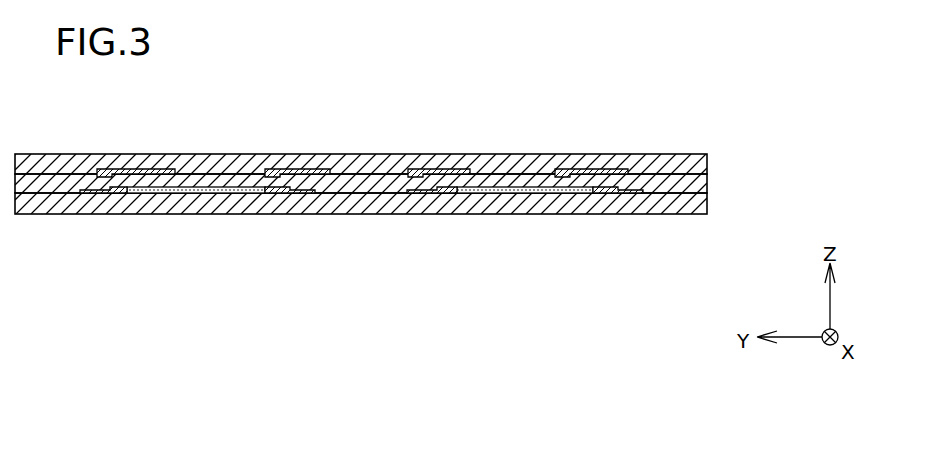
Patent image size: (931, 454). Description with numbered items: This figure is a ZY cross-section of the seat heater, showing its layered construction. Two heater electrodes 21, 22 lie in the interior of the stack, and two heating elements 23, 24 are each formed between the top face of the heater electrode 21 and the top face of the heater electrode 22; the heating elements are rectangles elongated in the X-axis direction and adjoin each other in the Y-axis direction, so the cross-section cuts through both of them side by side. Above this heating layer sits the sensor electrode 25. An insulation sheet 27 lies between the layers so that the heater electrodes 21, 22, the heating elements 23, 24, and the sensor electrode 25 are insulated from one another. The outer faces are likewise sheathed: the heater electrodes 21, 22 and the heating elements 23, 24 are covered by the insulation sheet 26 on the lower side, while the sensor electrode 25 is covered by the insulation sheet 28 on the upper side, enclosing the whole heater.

The heater electrode 21 is at (100, 193).
The heater electrode 22 is at (292, 193).
The heating element 23 is at (193, 193).
The heating element 24 is at (522, 193).
The sensor electrode 25 is at (138, 169).
The insulation sheet 26 is at (708, 203).
The insulation sheet 27 is at (708, 183).
The insulation sheet 28 is at (709, 163).